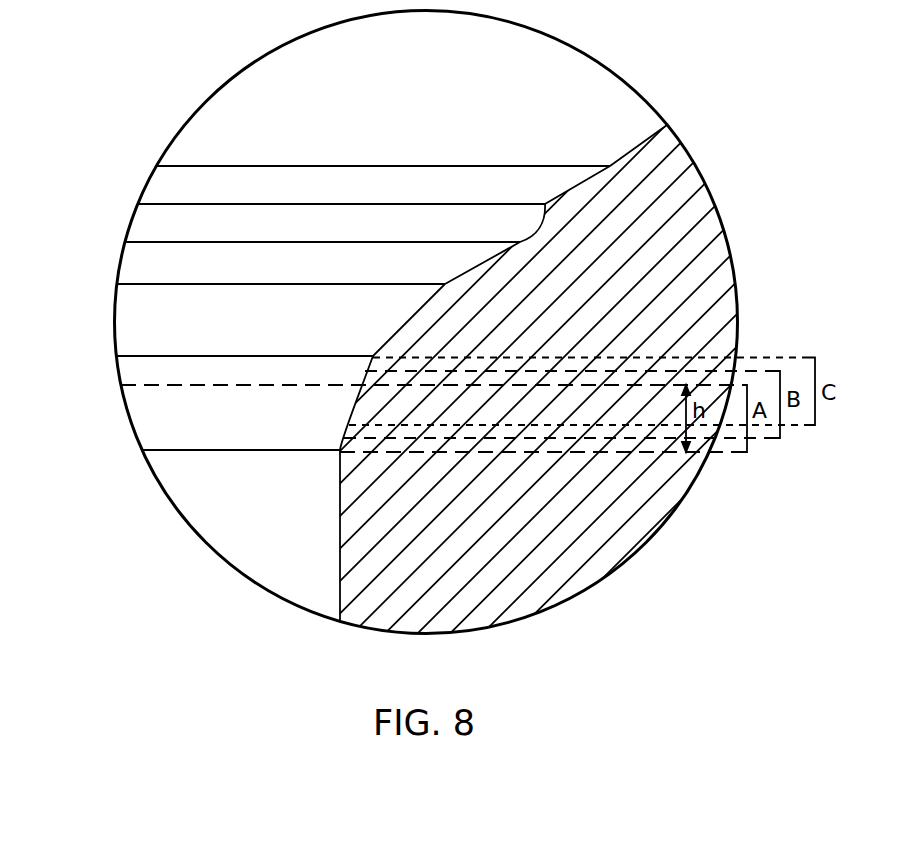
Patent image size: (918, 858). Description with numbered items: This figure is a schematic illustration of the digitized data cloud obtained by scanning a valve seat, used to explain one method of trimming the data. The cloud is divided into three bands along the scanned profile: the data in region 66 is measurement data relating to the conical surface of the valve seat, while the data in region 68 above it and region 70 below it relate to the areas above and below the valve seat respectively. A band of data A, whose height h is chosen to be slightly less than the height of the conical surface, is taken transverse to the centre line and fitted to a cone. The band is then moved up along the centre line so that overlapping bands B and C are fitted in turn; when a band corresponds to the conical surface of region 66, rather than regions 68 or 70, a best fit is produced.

The region above the valve seat 68 is at (98, 205).
The region of the valve seat conical surface 66 is at (98, 286).
The region below the valve seat 70 is at (98, 358).